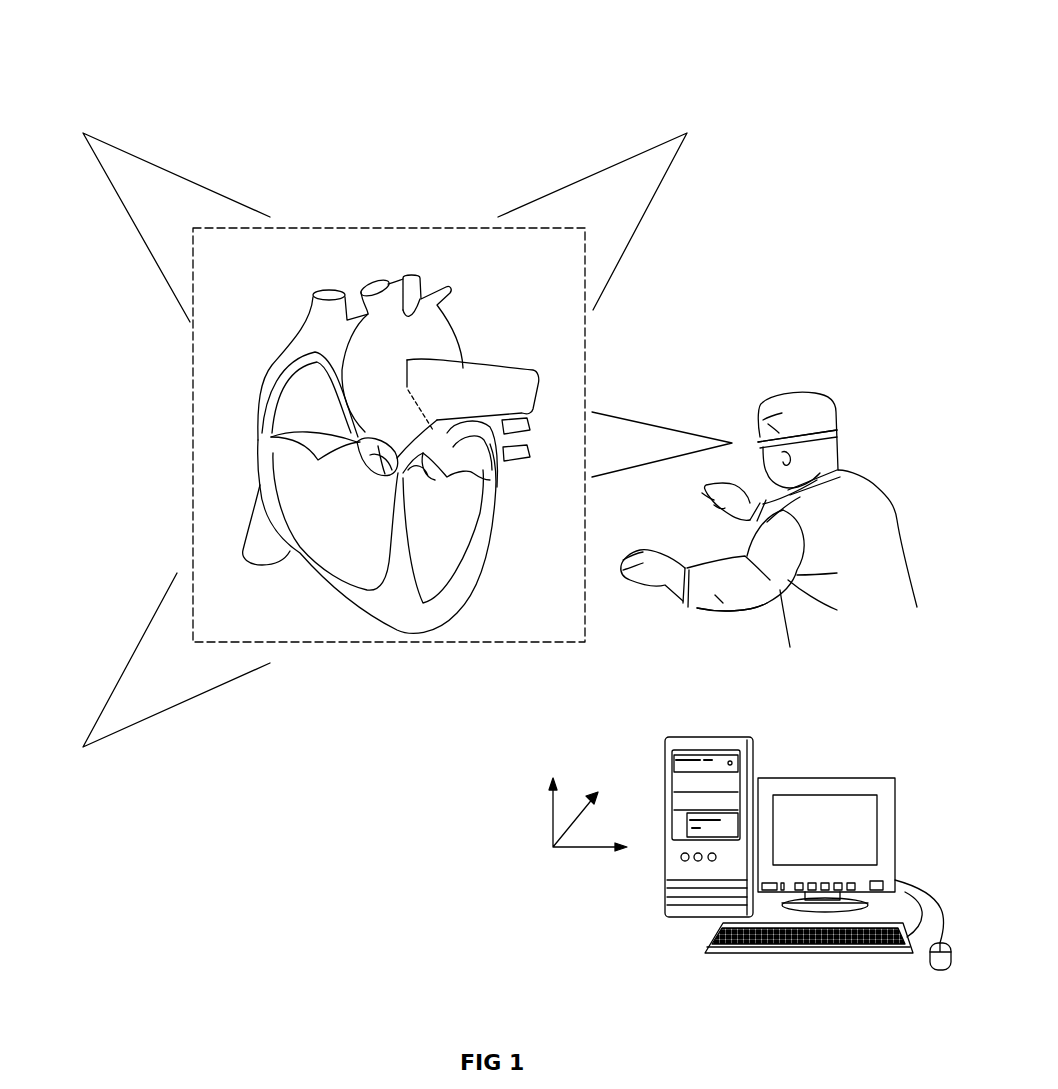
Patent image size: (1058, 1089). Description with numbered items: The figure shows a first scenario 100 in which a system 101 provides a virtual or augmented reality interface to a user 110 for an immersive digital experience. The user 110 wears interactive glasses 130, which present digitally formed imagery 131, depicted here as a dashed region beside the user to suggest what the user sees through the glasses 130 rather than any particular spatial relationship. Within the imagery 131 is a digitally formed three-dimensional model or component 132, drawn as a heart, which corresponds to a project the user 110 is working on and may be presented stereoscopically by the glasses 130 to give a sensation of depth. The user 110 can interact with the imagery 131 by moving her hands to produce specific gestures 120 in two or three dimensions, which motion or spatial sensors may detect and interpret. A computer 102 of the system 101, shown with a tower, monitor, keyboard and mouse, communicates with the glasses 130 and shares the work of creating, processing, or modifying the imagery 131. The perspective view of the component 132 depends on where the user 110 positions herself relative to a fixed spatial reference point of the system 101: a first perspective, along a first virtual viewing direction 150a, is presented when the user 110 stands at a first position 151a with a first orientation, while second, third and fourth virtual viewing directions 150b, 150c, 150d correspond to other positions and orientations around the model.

The first scenario 100 is at (781, 50).
The system 101 is at (571, 829).
The computer 102 is at (852, 778).
The user 110 is at (874, 488).
The gestures 120 is at (702, 610).
The interactive glasses 130 is at (758, 441).
The imagery 131 is at (402, 227).
The 3D component 132 is at (411, 276).
The first virtual viewing direction 150a is at (662, 438).
The second virtual viewing direction 150b is at (159, 676).
The third virtual viewing direction 150c is at (155, 213).
The fourth virtual viewing direction 150d is at (608, 207).
The first position 151a is at (776, 664).